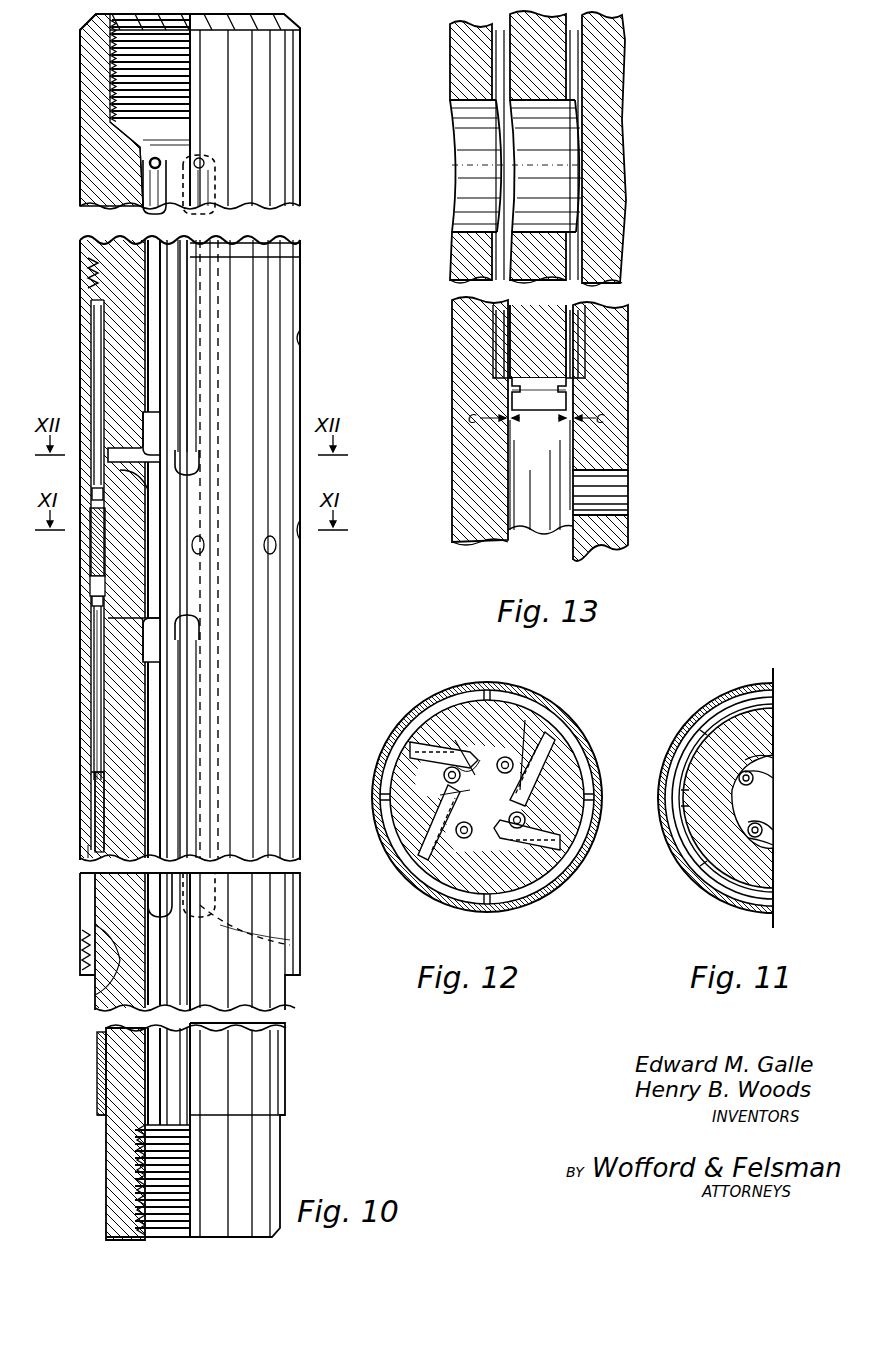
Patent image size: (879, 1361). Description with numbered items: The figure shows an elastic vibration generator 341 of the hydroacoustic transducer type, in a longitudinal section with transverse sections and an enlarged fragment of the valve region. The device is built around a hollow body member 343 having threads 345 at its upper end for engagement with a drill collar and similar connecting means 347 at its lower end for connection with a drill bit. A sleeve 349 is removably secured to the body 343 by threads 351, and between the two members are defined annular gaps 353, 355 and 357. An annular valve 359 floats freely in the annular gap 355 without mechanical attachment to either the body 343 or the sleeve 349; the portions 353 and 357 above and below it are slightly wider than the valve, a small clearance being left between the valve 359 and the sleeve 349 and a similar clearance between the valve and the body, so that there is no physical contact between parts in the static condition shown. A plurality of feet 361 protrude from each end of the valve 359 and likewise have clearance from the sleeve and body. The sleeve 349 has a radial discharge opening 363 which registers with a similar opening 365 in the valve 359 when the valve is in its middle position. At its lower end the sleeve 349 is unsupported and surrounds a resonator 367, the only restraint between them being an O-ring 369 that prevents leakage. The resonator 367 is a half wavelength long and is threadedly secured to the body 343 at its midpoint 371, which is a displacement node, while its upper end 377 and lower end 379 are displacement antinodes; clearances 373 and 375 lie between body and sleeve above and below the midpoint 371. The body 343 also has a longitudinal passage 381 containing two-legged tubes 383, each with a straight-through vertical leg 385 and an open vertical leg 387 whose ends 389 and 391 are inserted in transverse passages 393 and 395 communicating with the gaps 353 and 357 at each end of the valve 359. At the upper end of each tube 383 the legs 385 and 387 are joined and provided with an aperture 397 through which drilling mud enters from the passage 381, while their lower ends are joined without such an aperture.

In FIG. 10, the elastic vibration generator 341 is at (330, 322).
In FIG. 10, the hollow body member 343 is at (82, 240).
In FIG. 13, the hollow body member 343 is at (600, 318).
In FIG. 11, the hollow body member 343 is at (765, 722).
In FIG. 10, the threads 345 is at (118, 48).
In FIG. 10, the connecting means 347 is at (120, 1240).
In FIG. 10, the sleeve 349 is at (82, 735).
In FIG. 13, the sleeve 349 is at (470, 442).
In FIG. 12, the sleeve 349 is at (432, 722).
In FIG. 11, the sleeve 349 is at (712, 705).
In FIG. 10, the threads 351 is at (96, 282).
In FIG. 10, the annular gap 353 is at (98, 707).
In FIG. 13, the annular gap 353 is at (548, 442).
In FIG. 10, the annular gap 355 is at (96, 580).
In FIG. 13, the annular gap 355 is at (500, 340).
In FIG. 10, the annular gap 357 is at (96, 355).
In FIG. 12, the annular gap 357 is at (552, 872).
In FIG. 10, the annular valve 359 is at (97, 592).
In FIG. 13, the annular valve 359 is at (540, 78).
In FIG. 11, the annular valve 359 is at (668, 760).
In FIG. 10, the feet 361 is at (95, 495).
In FIG. 13, the feet 361 is at (548, 398).
In FIG. 12, the feet 361 is at (470, 700).
In FIG. 10, the radial discharge opening 363 is at (92, 545).
In FIG. 13, the radial discharge opening 363 is at (462, 143).
In FIG. 11, the radial discharge opening 363 is at (690, 880).
In FIG. 10, the opening 365 is at (100, 560).
In FIG. 13, the opening 365 is at (540, 180).
In FIG. 11, the opening 365 is at (700, 892).
In FIG. 10, the resonator 367 is at (100, 1045).
In FIG. 10, the O-ring 369 is at (90, 948).
In FIG. 10, the midpoint 371 is at (112, 955).
In FIG. 10, the clearance 373 is at (97, 1082).
In FIG. 10, the clearance 375 is at (88, 846).
In FIG. 10, the upper end 377 is at (92, 772).
In FIG. 10, the lower end 379 is at (102, 1115).
In FIG. 10, the longitudinal passage 381 is at (130, 128).
In FIG. 10, the two-legged passageways or tubes 383 is at (215, 900).
In FIG. 12, the two-legged passageways or tubes 383 is at (505, 760).
In FIG. 11, the two-legged passageways or tubes 383 is at (752, 800).
In FIG. 10, the straight-through vertical leg 385 is at (165, 570).
In FIG. 12, the straight-through vertical leg 385 is at (455, 775).
In FIG. 11, the straight-through vertical leg 385 is at (768, 770).
In FIG. 10, the open vertical leg 387 is at (165, 455).
In FIG. 12, the open vertical leg 387 is at (445, 792).
In FIG. 10, the end 389 is at (145, 438).
In FIG. 10, the end 391 is at (150, 630).
In FIG. 13, the end 391 is at (618, 490).
In FIG. 10, the passage 393 is at (150, 505).
In FIG. 12, the passage 393 is at (520, 735).
In FIG. 10, the passage 395 is at (140, 623).
In FIG. 10, the aperture 397 is at (210, 158).